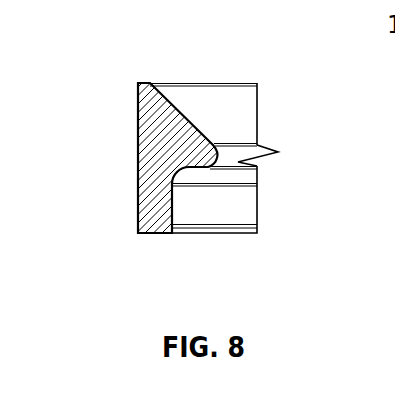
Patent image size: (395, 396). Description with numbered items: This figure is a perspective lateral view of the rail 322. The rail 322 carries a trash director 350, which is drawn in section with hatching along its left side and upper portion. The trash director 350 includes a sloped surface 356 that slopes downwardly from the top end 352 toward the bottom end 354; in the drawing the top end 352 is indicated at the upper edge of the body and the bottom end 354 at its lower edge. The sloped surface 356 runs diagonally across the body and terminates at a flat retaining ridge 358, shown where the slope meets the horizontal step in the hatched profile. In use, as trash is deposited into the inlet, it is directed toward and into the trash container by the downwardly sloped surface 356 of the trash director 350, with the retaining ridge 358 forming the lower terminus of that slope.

The rail 322 is at (110, 97).
The trash director 350 is at (226, 106).
The top end 352 is at (158, 82).
The bottom end 354 is at (170, 234).
The sloped surface 356 is at (240, 125).
The flat retaining ridge 358 is at (187, 169).